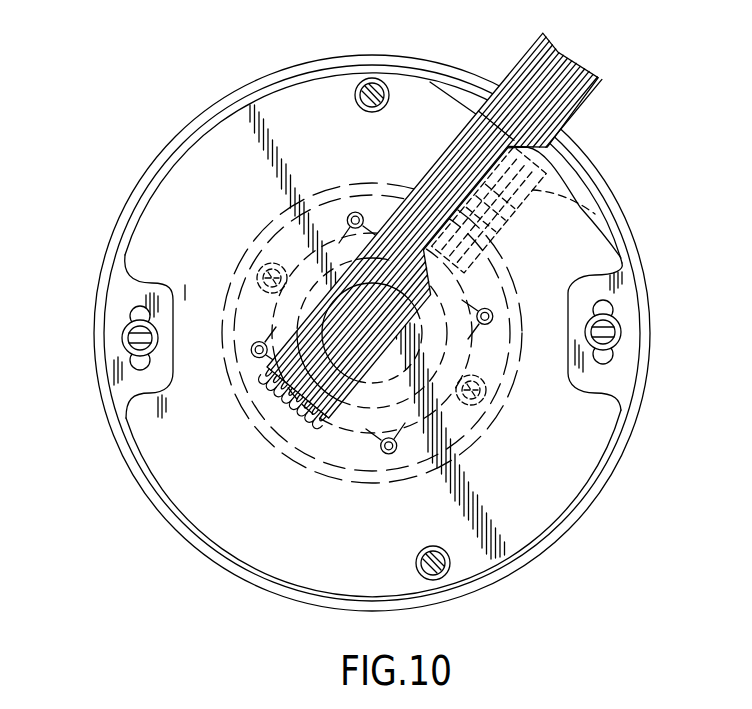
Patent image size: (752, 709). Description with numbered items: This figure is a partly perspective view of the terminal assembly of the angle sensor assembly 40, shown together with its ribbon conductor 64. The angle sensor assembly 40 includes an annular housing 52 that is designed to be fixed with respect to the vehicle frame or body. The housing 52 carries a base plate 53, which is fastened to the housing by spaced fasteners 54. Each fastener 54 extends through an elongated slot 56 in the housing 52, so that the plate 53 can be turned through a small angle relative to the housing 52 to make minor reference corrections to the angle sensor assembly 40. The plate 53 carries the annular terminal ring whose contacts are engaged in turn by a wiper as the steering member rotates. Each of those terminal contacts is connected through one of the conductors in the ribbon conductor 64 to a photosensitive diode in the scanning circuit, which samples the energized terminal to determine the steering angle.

The angle sensor assembly 40 is at (110, 446).
The annular housing 52 is at (107, 375).
The base plate 53 is at (212, 483).
The fastener 54 is at (125, 330).
The elongated slot 56 is at (133, 312).
The ribbon conductor 64 is at (574, 111).